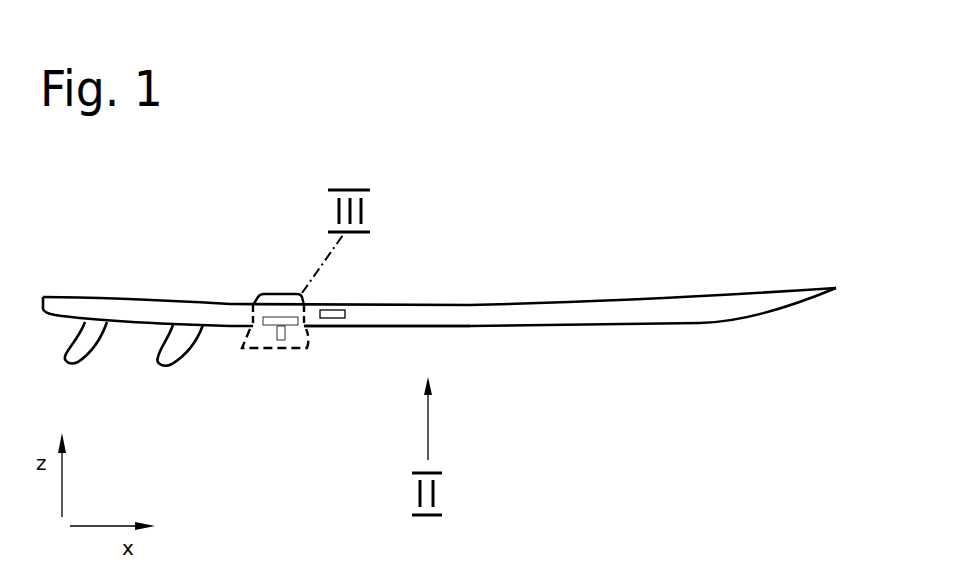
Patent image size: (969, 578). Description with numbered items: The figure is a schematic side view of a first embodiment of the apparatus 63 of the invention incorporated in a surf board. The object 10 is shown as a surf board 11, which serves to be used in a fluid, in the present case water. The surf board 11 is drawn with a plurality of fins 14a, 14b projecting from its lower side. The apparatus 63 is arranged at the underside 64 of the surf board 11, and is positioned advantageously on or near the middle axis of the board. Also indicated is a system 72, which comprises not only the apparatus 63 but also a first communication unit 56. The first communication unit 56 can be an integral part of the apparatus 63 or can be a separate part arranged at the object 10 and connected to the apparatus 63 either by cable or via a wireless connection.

The object 10 is at (508, 315).
The surf board 11 is at (555, 315).
The fin 14a is at (95, 333).
The fin 14b is at (192, 340).
The first communication unit 56 is at (340, 314).
The apparatus 63 is at (278, 392).
The underside 64 is at (608, 345).
The system 72 is at (387, 92).